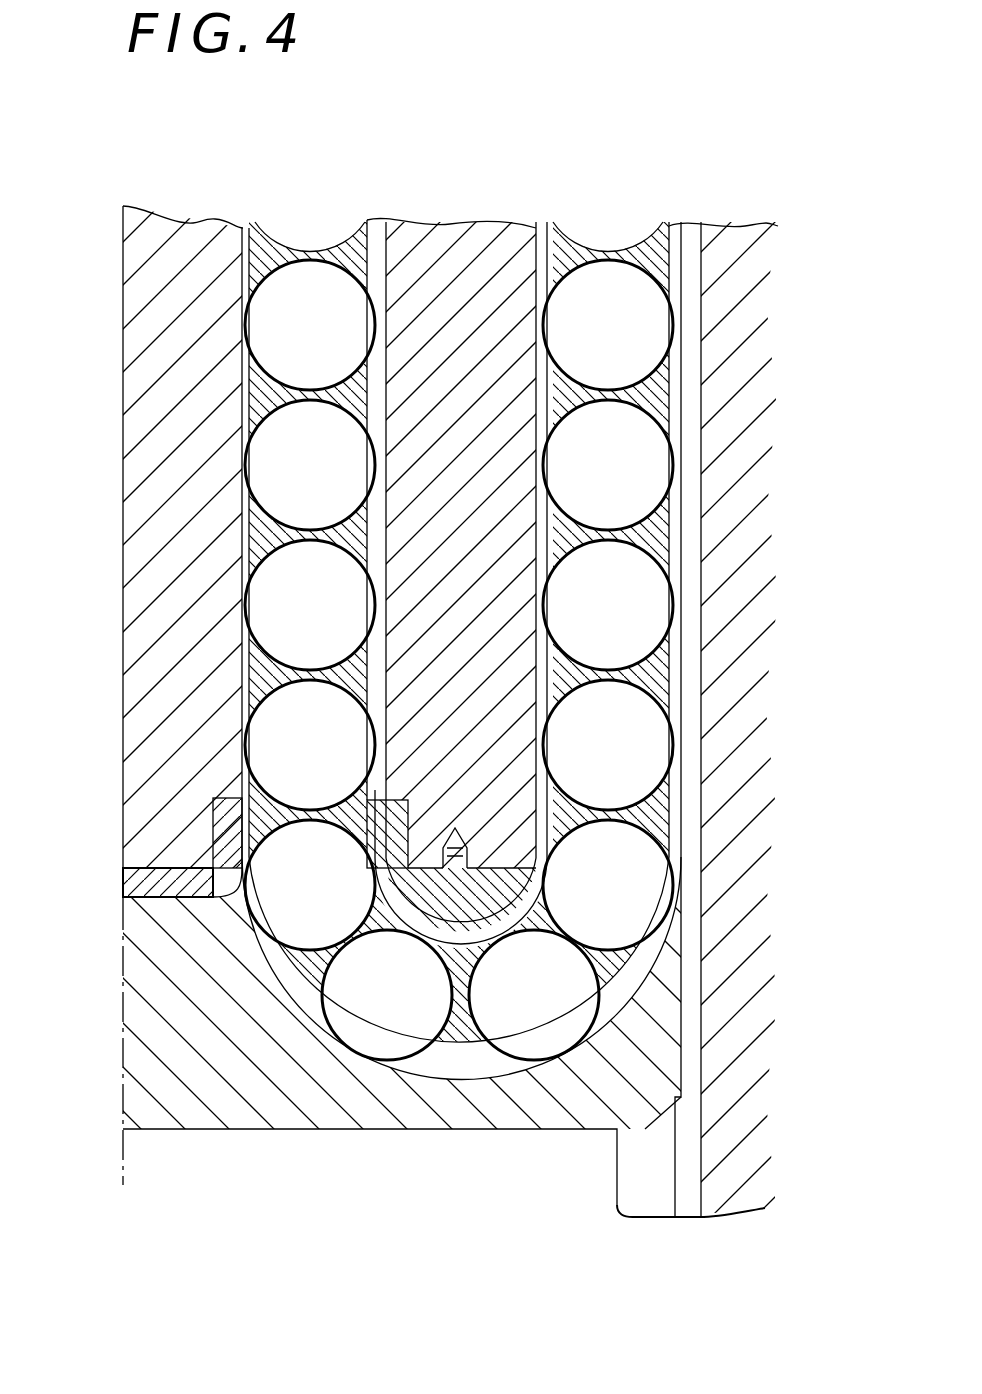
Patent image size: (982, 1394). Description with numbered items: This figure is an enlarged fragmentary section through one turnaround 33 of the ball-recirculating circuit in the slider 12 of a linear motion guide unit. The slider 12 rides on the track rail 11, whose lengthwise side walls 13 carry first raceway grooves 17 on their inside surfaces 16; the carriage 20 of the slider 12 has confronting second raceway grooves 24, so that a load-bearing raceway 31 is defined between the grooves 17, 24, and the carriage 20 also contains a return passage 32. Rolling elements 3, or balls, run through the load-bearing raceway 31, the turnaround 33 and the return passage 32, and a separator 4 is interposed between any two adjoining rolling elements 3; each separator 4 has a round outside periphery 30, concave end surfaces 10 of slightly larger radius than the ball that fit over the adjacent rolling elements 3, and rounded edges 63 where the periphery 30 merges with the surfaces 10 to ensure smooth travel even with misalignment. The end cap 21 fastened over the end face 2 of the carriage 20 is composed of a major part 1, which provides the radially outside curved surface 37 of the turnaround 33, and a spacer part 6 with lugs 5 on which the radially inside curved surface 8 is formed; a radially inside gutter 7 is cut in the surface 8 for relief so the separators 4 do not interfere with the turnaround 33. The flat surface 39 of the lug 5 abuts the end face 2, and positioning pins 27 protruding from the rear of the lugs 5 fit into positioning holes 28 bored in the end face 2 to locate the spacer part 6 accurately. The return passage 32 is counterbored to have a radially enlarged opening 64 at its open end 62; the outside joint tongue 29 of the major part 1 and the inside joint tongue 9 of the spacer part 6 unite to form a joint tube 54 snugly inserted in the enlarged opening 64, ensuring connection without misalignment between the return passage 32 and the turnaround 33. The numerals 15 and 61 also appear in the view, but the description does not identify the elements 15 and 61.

The major part 1 is at (293, 1090).
The end face 2 is at (340, 848).
The rolling element 3 is at (287, 336).
The separator 4 is at (350, 388).
The lug 5 is at (453, 917).
The spacer part 6 is at (145, 885).
The radially inside gutter 7 is at (425, 945).
The radially inside curved surface 8 is at (517, 1040).
The inside joint tongue 9 is at (397, 820).
The end surface 10 is at (245, 363).
The track rail 11 is at (740, 678).
The slider 12 is at (232, 213).
The side wall 13 is at (735, 1003).
The housing 15 is at (240, 1180).
The inside surface 16 is at (608, 1208).
The raceway groove 17 is at (672, 417).
The carriage 20 is at (165, 488).
The end cap 21 is at (388, 1100).
The raceway groove 24 is at (578, 340).
The positioning pin 27 is at (470, 862).
The positioning hole 28 is at (447, 827).
The outside joint tongue 29 is at (225, 832).
The outside periphery 30 is at (243, 400).
The load-bearing raceway 31 is at (666, 250).
The return passage 32 is at (370, 385).
The turnaround 33 is at (477, 1068).
The radially outside curved surface 37 is at (647, 963).
The flat surface 39 is at (627, 855).
The joint tube 54 is at (230, 852).
The shim plate 61 is at (688, 630).
The open end 62 is at (247, 818).
The rounded edge 63 is at (669, 357).
The radially enlarged opening 64 is at (400, 800).